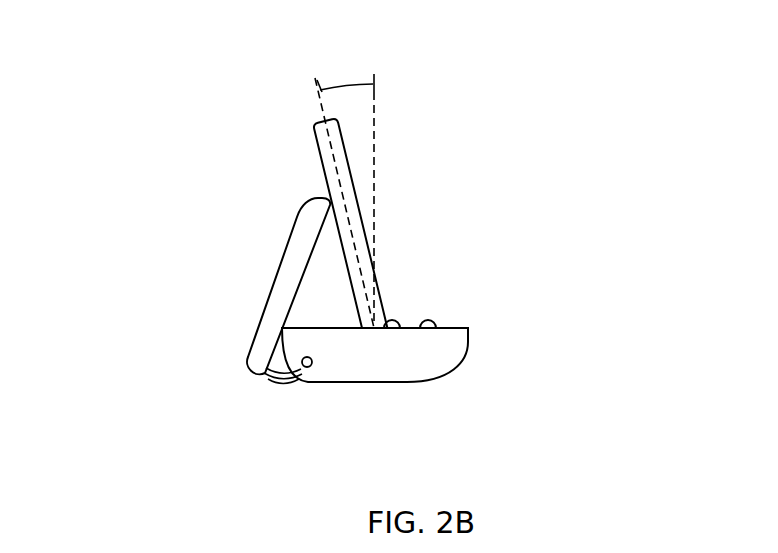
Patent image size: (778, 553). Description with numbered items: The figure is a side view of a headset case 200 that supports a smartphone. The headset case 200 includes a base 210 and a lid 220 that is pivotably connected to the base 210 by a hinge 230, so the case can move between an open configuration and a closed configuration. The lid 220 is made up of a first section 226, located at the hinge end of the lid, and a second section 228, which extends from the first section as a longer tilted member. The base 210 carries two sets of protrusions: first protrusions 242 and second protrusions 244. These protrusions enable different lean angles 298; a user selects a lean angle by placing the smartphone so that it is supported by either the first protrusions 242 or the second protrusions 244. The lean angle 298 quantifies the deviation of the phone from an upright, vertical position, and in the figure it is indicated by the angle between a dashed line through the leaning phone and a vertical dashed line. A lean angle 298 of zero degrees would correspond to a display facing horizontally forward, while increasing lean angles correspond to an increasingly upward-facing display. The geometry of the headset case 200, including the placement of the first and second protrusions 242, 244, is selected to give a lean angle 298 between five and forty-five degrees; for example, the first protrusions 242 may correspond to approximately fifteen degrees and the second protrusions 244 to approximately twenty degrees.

The headset case 200 is at (498, 148).
The base 210 is at (369, 370).
The lid 220 is at (330, 197).
The first section 226 is at (327, 386).
The second section 228 is at (223, 352).
The hinge 230 is at (302, 361).
The first protrusions 242 is at (400, 330).
The second protrusions 244 is at (434, 322).
The lean angle 298 is at (337, 82).